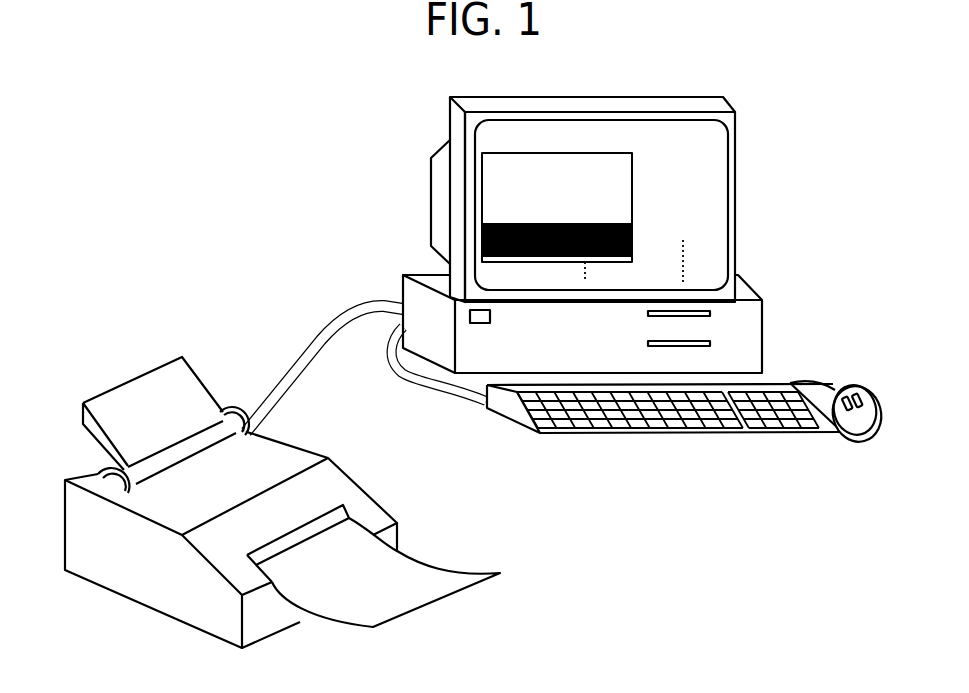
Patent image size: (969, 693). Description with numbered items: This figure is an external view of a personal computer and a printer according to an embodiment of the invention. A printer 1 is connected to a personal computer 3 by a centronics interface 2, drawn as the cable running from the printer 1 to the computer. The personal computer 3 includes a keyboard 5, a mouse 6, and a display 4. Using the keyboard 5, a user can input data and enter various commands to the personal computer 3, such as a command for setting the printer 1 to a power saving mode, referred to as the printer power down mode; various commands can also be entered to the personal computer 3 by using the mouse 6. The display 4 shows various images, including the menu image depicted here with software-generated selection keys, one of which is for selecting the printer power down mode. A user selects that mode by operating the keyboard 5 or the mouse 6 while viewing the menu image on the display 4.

The printer 1 is at (282, 502).
The centronics interface 2 is at (324, 357).
The personal computer 3 is at (545, 244).
The display 4 is at (629, 199).
The keyboard 5 is at (665, 438).
The mouse 6 is at (860, 438).